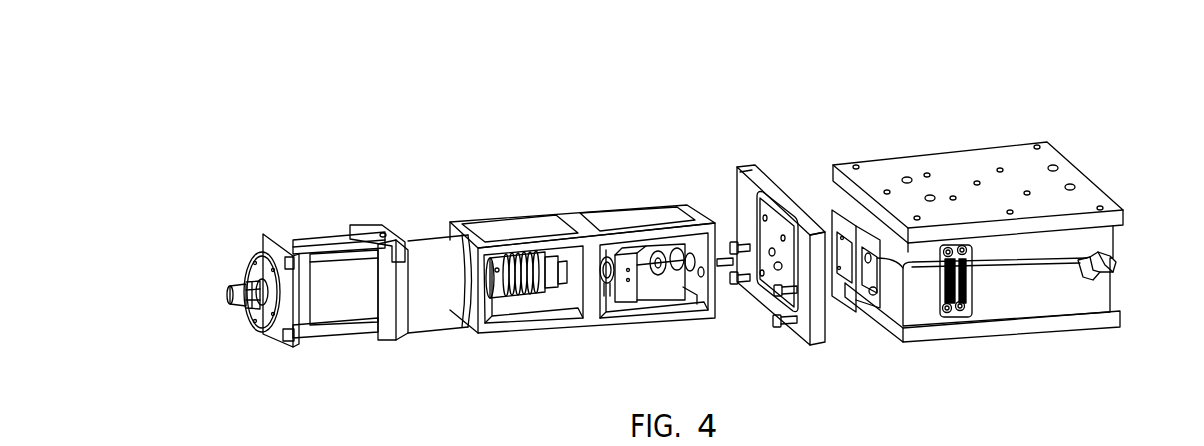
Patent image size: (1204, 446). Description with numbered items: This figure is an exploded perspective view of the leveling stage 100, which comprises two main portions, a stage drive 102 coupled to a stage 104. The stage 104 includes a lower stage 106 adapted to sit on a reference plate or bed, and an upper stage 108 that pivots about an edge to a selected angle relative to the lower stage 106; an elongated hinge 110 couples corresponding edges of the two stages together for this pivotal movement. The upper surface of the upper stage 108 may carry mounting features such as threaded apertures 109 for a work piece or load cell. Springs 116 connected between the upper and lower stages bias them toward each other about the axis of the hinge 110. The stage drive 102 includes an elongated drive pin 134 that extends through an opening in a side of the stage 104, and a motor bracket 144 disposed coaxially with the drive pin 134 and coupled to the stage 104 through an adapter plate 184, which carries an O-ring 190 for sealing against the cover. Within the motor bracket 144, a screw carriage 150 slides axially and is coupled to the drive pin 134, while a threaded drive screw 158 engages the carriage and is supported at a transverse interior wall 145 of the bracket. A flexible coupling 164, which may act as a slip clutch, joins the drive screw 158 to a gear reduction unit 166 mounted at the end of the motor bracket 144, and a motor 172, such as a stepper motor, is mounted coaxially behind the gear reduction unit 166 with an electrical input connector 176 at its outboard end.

The leveling stage 100 is at (756, 70).
The stage drive 102 is at (487, 181).
The stage 104 is at (1121, 351).
The lower stage 106 is at (1032, 330).
The upper stage 108 is at (1016, 152).
The threaded apertures 109 is at (1060, 168).
The elongated hinge 110 is at (1105, 266).
The springs 116 is at (958, 295).
The drive pin 134 is at (722, 270).
The motor bracket 144 is at (642, 212).
The transverse interior wall 145 is at (580, 227).
The screw carriage 150 is at (650, 300).
The drive screw 158 is at (648, 278).
The flexible coupling 164 is at (535, 292).
The gear reduction unit 166 is at (426, 316).
The motor 172 is at (335, 308).
The electrical input connector 176 is at (243, 302).
The adapter plate 184 is at (815, 340).
The O-ring 190 is at (736, 178).